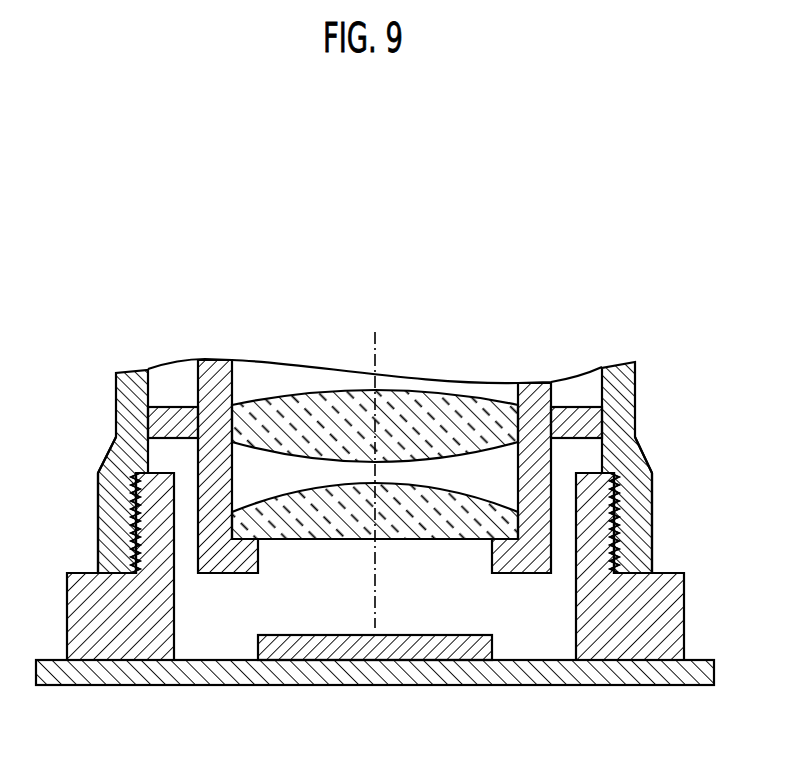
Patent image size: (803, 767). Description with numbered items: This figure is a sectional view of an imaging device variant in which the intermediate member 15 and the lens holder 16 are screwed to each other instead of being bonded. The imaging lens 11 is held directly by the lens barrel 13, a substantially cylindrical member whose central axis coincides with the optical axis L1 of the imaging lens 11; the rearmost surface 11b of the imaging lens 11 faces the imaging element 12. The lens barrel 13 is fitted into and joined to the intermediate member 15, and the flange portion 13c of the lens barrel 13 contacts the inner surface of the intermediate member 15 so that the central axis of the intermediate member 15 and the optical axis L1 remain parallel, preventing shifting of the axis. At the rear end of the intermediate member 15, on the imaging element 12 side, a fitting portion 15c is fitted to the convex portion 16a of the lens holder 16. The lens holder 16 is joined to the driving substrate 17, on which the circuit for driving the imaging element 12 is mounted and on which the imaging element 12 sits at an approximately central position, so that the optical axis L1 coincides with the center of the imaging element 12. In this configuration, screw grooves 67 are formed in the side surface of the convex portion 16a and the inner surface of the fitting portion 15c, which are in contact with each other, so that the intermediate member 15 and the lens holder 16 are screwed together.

The imaging lens 11 is at (419, 398).
The surface on the side nearest the imaging element 11b is at (437, 540).
The imaging element 12 is at (462, 637).
The lens barrel 13 is at (222, 366).
The flange portion 13c is at (165, 427).
The intermediate member 15 is at (134, 371).
The fitting portion 15c is at (108, 493).
The lens holder 16 is at (68, 625).
The convex portion 16a is at (148, 545).
The driving substrate 17 is at (524, 685).
The screw grooves 67 is at (134, 527).
The optical axis L1 is at (373, 345).